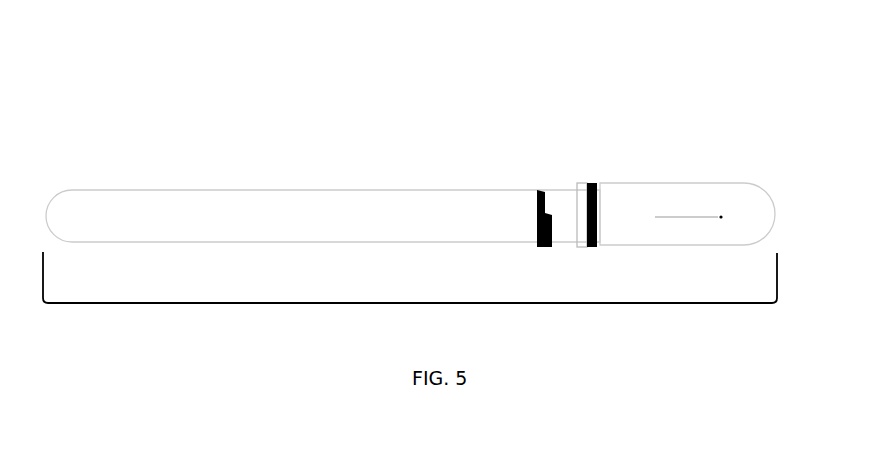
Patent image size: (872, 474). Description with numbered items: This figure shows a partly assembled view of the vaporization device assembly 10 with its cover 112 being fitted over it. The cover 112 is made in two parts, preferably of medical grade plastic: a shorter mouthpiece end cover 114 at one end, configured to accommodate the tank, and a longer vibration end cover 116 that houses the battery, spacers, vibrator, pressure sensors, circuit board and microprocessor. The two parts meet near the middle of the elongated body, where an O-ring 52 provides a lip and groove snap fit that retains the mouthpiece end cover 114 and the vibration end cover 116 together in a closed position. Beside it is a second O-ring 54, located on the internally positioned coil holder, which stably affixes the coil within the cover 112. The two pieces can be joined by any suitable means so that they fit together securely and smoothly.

The vaporization device assembly 10 is at (545, 123).
The O-ring 52 is at (523, 190).
The O-ring 54 is at (568, 245).
The cover 112 is at (370, 303).
The mouthpiece end cover 114 is at (649, 188).
The vibration end cover 116 is at (459, 186).